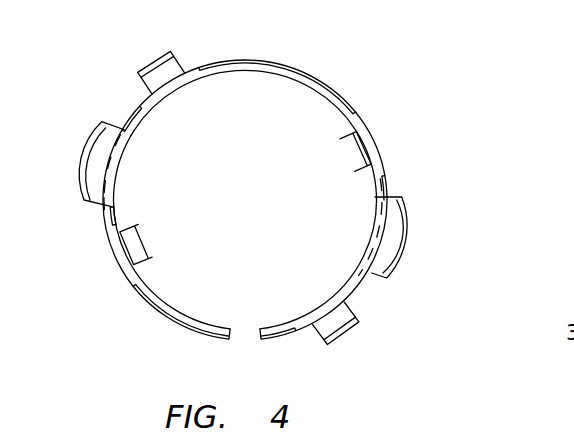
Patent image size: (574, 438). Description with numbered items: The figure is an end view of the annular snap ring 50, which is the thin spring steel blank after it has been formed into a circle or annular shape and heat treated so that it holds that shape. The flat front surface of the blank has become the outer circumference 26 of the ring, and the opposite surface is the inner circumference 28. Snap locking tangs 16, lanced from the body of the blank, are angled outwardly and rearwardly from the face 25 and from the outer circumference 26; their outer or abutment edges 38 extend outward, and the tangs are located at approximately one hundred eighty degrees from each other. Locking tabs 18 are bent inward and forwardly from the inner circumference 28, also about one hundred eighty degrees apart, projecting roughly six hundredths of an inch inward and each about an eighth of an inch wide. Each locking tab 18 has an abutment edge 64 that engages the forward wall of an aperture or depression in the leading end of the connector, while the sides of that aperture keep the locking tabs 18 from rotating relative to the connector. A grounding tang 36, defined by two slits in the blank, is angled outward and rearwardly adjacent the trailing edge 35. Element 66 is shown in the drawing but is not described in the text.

The annular snap ring 50 is at (393, 123).
The snap locking tangs 16 is at (183, 67).
The locking tab 18 is at (123, 235).
The face 25 is at (215, 72).
The outer circumference 26 is at (245, 62).
The inner circumference 28 is at (270, 72).
The trailing edge 35 is at (408, 240).
The grounding tang 36 is at (96, 208).
The abutment edge 38 is at (155, 60).
The abutment edge 64 is at (342, 157).
The curved tab 66 is at (80, 150).